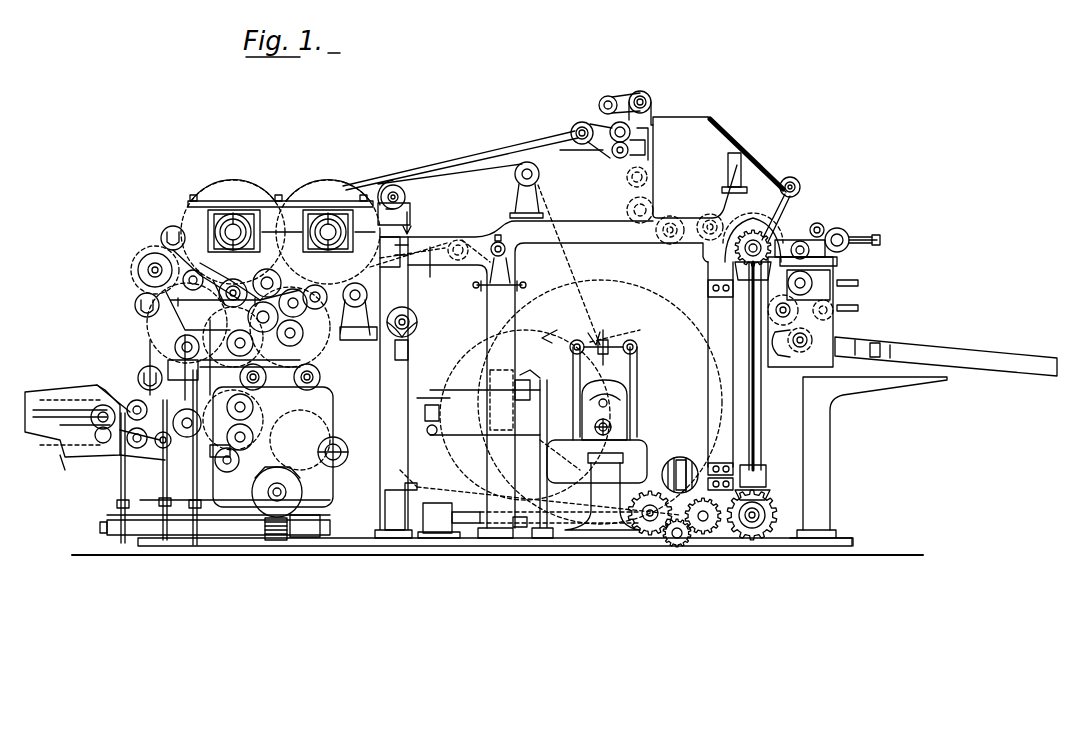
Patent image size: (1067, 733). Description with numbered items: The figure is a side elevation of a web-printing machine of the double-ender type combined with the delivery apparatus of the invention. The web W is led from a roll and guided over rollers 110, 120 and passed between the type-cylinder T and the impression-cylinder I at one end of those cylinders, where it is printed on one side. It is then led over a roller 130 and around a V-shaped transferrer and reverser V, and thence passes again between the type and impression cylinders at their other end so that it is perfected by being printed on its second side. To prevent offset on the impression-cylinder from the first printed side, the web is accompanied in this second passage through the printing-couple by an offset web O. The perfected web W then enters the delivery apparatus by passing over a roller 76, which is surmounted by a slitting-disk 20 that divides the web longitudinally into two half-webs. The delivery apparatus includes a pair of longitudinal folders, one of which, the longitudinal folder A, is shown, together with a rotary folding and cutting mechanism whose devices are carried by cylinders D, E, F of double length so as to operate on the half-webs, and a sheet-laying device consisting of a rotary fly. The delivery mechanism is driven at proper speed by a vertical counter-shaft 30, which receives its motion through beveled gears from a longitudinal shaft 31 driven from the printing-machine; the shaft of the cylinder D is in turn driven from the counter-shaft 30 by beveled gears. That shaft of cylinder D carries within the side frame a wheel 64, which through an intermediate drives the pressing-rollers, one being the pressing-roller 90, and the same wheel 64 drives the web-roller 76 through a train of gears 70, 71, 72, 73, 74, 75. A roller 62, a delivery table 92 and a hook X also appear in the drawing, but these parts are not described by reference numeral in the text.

The slitting-disk 20 is at (613, 98).
The vertical counter-shaft 30 is at (854, 461).
The longitudinal shaft 31 is at (473, 524).
The feed roller 62 is at (848, 236).
The wheel 64 is at (735, 258).
The gear 70 is at (707, 213).
The gear 71 is at (673, 215).
The gear 72 is at (650, 200).
The gear 73 is at (647, 172).
The gear 74 is at (648, 146).
The gear 75 is at (652, 104).
The web-roller 76 is at (585, 123).
The pressing-roller 90 is at (800, 186).
The delivery table 92 is at (908, 350).
The roller 110 is at (309, 492).
The roller 120 is at (345, 310).
The roller 130 is at (406, 193).
The type-cylinder T is at (226, 187).
The impression-cylinder I is at (318, 192).
The web W is at (378, 180).
The offset web O is at (681, 460).
The longitudinal folder A is at (747, 150).
The cylinder D is at (788, 235).
The cylinder E is at (796, 240).
The roller P is at (821, 224).
The cylinder F is at (835, 276).
The hook X is at (779, 358).
The V-shaped transferrer and reverser V is at (409, 352).